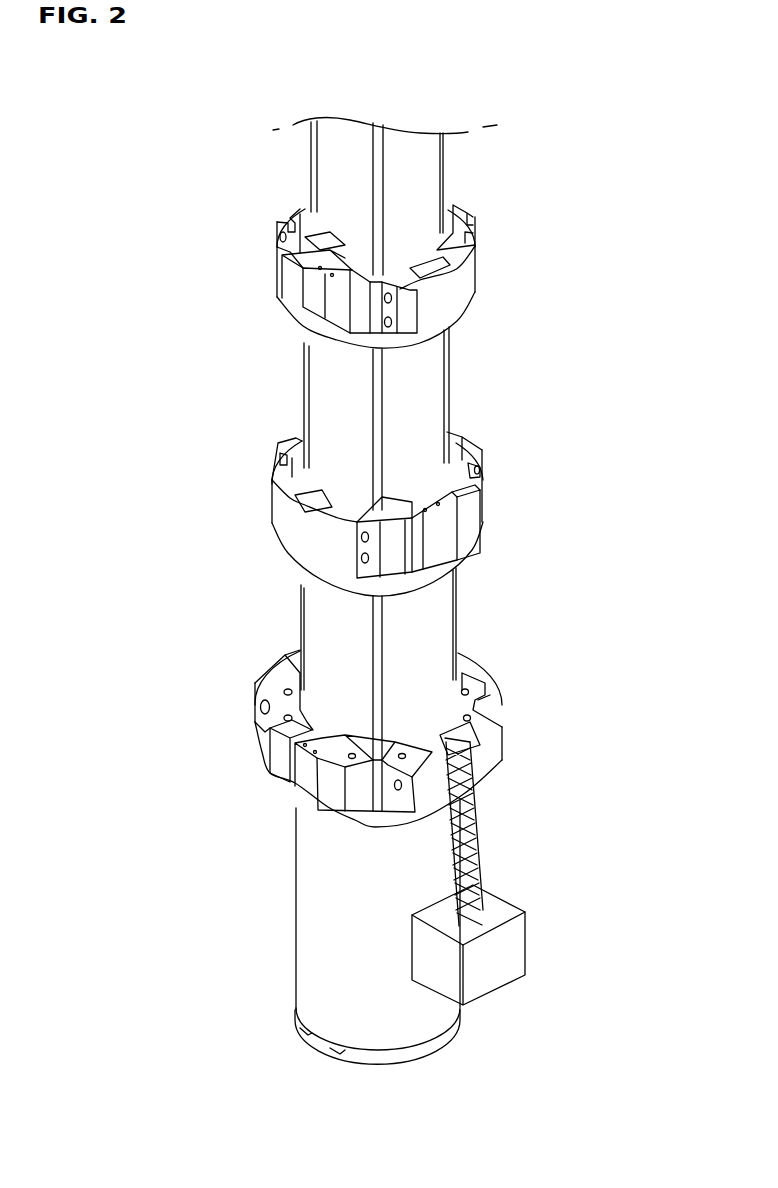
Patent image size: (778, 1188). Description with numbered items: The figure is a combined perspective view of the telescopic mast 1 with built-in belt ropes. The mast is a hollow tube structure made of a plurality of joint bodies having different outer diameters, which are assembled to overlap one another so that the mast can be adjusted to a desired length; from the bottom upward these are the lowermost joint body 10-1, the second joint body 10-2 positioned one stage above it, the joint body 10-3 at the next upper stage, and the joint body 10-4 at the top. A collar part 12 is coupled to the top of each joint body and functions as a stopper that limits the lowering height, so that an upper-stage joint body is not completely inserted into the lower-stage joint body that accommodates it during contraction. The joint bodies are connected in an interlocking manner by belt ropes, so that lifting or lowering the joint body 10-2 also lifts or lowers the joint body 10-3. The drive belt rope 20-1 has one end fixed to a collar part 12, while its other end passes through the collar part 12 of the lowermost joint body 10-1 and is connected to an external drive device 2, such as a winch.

The telescopic mast 1 is at (193, 113).
The joint body 10-4 is at (413, 190).
The joint body 10-3 is at (423, 408).
The joint body 10-2 is at (430, 638).
The lowermost joint body 10-1 is at (328, 910).
The collar part 12 is at (290, 285).
The drive belt rope 20-1 is at (473, 843).
The external drive device 2 is at (518, 950).